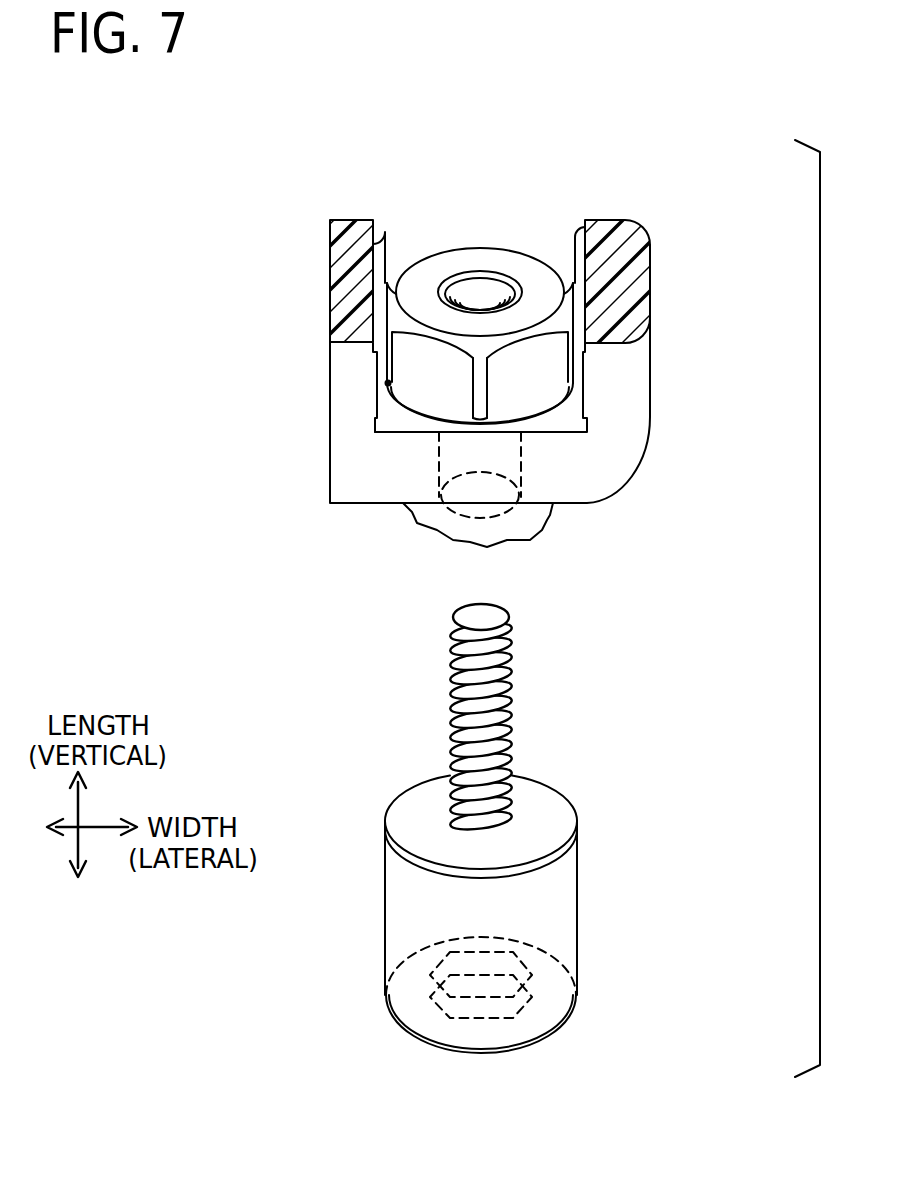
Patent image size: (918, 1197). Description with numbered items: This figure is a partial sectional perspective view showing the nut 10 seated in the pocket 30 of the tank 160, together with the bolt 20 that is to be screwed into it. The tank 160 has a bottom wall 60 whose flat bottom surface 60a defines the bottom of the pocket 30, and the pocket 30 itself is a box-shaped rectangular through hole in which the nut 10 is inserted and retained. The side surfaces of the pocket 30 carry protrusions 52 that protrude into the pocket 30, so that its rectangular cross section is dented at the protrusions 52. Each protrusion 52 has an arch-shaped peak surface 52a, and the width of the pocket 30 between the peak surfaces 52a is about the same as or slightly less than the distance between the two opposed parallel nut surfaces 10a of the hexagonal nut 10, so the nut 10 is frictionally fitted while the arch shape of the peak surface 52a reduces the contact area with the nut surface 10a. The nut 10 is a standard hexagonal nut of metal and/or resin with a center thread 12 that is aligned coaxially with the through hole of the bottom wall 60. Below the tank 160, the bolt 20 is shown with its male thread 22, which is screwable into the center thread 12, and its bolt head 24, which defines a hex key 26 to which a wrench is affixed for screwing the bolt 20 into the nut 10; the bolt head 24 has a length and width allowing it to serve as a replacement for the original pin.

The tank 160 is at (684, 167).
The nut 10 is at (486, 300).
The nut surface 10a is at (387, 322).
The center thread 12 is at (480, 283).
The pocket 30 is at (481, 312).
The protrusion 52 is at (416, 338).
The peak surface 52a is at (386, 382).
The bottom wall 60 is at (491, 399).
The bottom surface 60a is at (375, 433).
The bolt 20 is at (568, 839).
The male thread 22 is at (512, 702).
The bolt head 24 is at (600, 858).
The hex key 26 is at (518, 985).